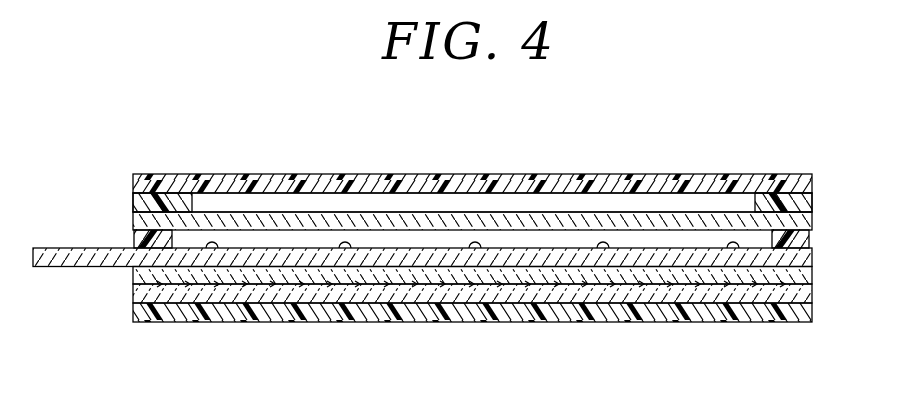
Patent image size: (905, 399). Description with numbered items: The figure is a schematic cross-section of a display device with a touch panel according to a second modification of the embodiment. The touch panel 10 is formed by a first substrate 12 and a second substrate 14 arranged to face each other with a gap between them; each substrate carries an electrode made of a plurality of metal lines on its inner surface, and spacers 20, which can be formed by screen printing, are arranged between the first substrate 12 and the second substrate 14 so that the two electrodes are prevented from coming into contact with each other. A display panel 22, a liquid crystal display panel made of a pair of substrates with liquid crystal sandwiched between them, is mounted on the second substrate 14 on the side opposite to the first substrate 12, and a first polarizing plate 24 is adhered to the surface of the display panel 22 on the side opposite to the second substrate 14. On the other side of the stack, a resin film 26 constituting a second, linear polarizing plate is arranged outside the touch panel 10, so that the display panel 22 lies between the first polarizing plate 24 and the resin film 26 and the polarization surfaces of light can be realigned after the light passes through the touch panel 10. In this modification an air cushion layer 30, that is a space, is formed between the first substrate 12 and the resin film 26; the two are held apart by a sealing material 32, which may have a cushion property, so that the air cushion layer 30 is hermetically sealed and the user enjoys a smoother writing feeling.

The touch panel 10 is at (822, 212).
The first substrate 12 is at (540, 215).
The second substrate 14 is at (530, 269).
The spacers 20 is at (346, 239).
The display panel 22 is at (822, 267).
The first polarizing plate 24 is at (615, 313).
The resin film 26 is at (663, 184).
The air cushion layer 30 is at (462, 201).
The sealing material 32 is at (163, 200).